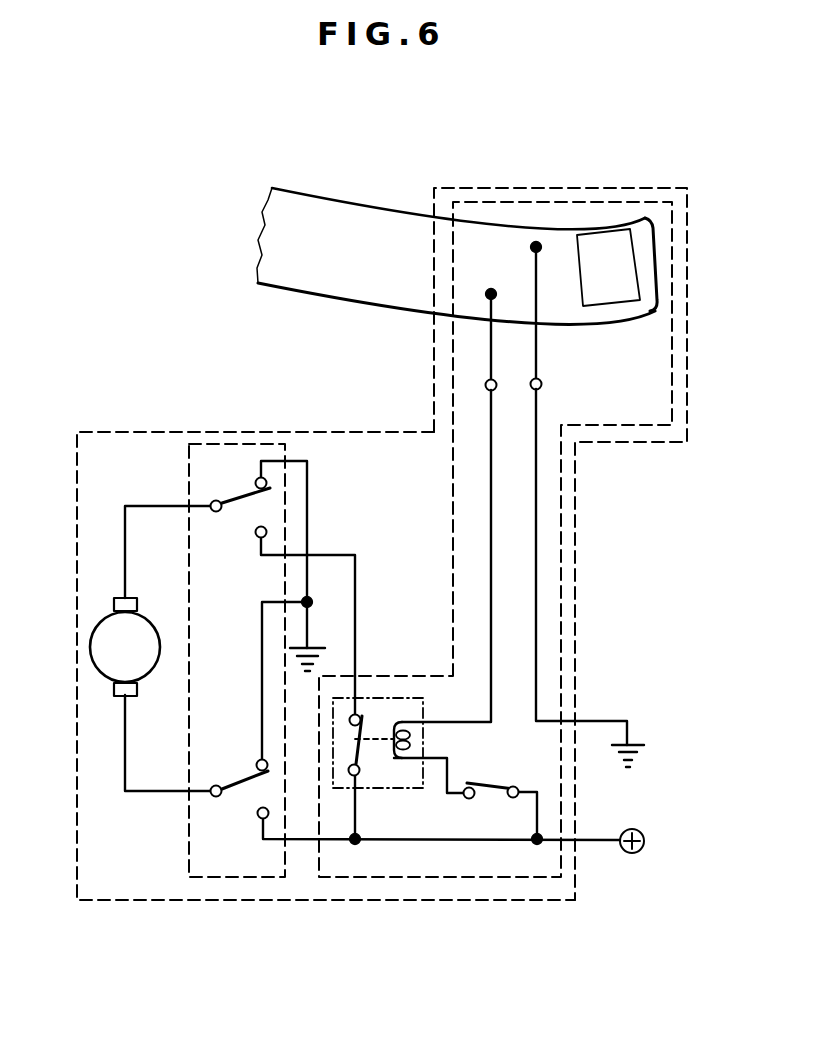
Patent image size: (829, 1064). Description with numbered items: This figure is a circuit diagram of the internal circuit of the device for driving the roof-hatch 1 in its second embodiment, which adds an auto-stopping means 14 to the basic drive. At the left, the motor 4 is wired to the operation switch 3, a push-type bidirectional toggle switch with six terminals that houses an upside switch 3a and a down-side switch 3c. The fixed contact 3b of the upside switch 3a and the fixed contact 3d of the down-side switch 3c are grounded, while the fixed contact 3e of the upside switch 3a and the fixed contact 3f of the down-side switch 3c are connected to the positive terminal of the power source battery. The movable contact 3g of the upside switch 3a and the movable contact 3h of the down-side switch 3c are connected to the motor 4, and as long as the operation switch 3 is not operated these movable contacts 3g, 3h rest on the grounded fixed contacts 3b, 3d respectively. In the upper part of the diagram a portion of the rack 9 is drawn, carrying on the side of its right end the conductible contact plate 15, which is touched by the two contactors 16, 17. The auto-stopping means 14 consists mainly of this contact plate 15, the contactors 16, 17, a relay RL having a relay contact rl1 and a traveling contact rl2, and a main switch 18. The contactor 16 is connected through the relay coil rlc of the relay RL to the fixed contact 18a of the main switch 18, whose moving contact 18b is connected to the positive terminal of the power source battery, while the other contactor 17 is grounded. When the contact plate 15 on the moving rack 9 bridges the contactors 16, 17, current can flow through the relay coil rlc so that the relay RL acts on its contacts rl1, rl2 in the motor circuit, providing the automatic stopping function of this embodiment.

The device for driving the roof-hatch 1 is at (576, 612).
The operation switch 3 is at (188, 463).
The upside switch 3a is at (245, 465).
The fixed contact 3b is at (268, 482).
The down-side switch 3c is at (221, 785).
The fixed contact 3d is at (268, 759).
The fixed contact 3e is at (268, 531).
The fixed contact 3f is at (268, 818).
The movable contact 3g is at (240, 502).
The movable contact 3h is at (242, 792).
The motor 4 is at (91, 665).
The rack 9 is at (342, 220).
The auto-stopping means 14 is at (561, 556).
The conductible contact plate 15 is at (622, 257).
The contactor 16 is at (490, 350).
The contactor 17 is at (538, 351).
The main switch 18 is at (488, 784).
The fixed contact 18a is at (468, 800).
The moving contact 18b is at (490, 790).
The relay RL is at (424, 700).
The relay contact rl1 is at (360, 716).
The traveling contact rl2 is at (359, 776).
The relay coil rlc is at (411, 742).